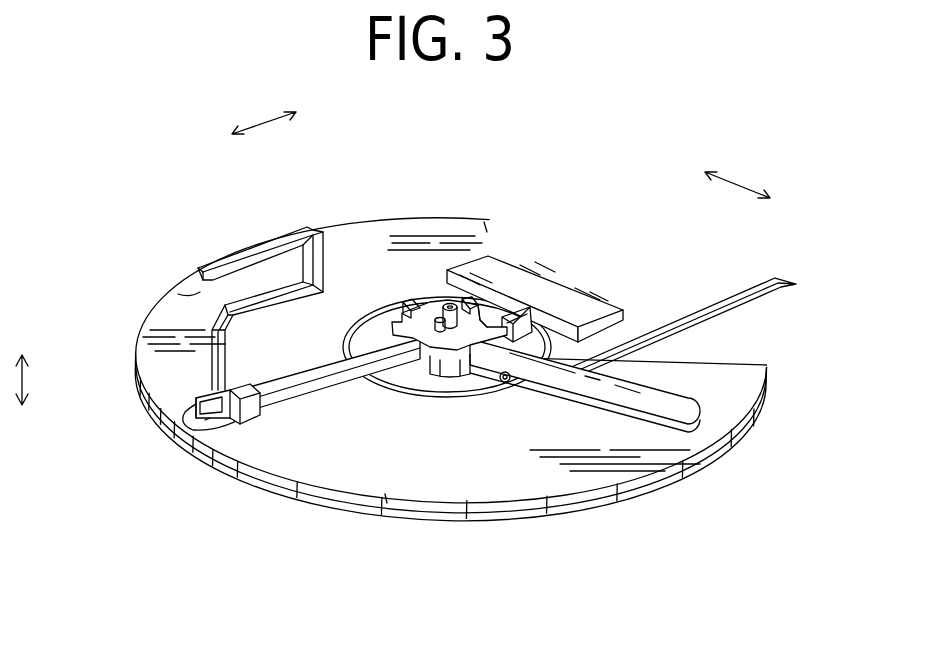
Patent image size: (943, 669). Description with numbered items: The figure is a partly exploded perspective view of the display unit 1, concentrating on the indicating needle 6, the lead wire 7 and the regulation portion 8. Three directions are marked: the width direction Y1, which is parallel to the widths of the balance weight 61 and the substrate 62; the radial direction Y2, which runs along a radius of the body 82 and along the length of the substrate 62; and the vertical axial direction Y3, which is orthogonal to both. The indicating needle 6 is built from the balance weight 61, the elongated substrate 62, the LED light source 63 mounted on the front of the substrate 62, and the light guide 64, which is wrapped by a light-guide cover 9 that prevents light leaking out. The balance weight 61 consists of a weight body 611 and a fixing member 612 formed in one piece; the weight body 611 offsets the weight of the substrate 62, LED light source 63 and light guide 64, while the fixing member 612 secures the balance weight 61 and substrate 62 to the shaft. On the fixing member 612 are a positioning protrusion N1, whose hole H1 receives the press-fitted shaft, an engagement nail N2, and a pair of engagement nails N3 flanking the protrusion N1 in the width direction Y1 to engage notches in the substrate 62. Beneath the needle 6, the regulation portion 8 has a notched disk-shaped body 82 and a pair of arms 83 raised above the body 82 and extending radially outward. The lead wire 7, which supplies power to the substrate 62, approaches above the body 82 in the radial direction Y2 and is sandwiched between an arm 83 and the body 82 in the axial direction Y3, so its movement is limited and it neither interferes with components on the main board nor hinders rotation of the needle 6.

The display unit 1 is at (812, 204).
The indicating needle 6 is at (90, 645).
The lead wire 7 is at (733, 297).
The regulation portion 8 is at (566, 514).
The light-guide cover 9 is at (185, 293).
The balance weight 61 is at (570, 283).
The weight body 611 is at (616, 308).
The fixing member 612 is at (543, 320).
The substrate 62 is at (296, 400).
The LED light source 63 is at (198, 410).
The light guide 64 is at (277, 262).
The body 82 is at (388, 485).
The arms 83 is at (337, 387).
The positioning protrusion N1 is at (437, 304).
The engagement nail N2 is at (473, 298).
The engagement nails N3 is at (413, 303).
The hole H1 is at (450, 304).
The width direction Y1 is at (740, 186).
The radial direction Y2 is at (262, 124).
The axial direction Y3 is at (22, 380).